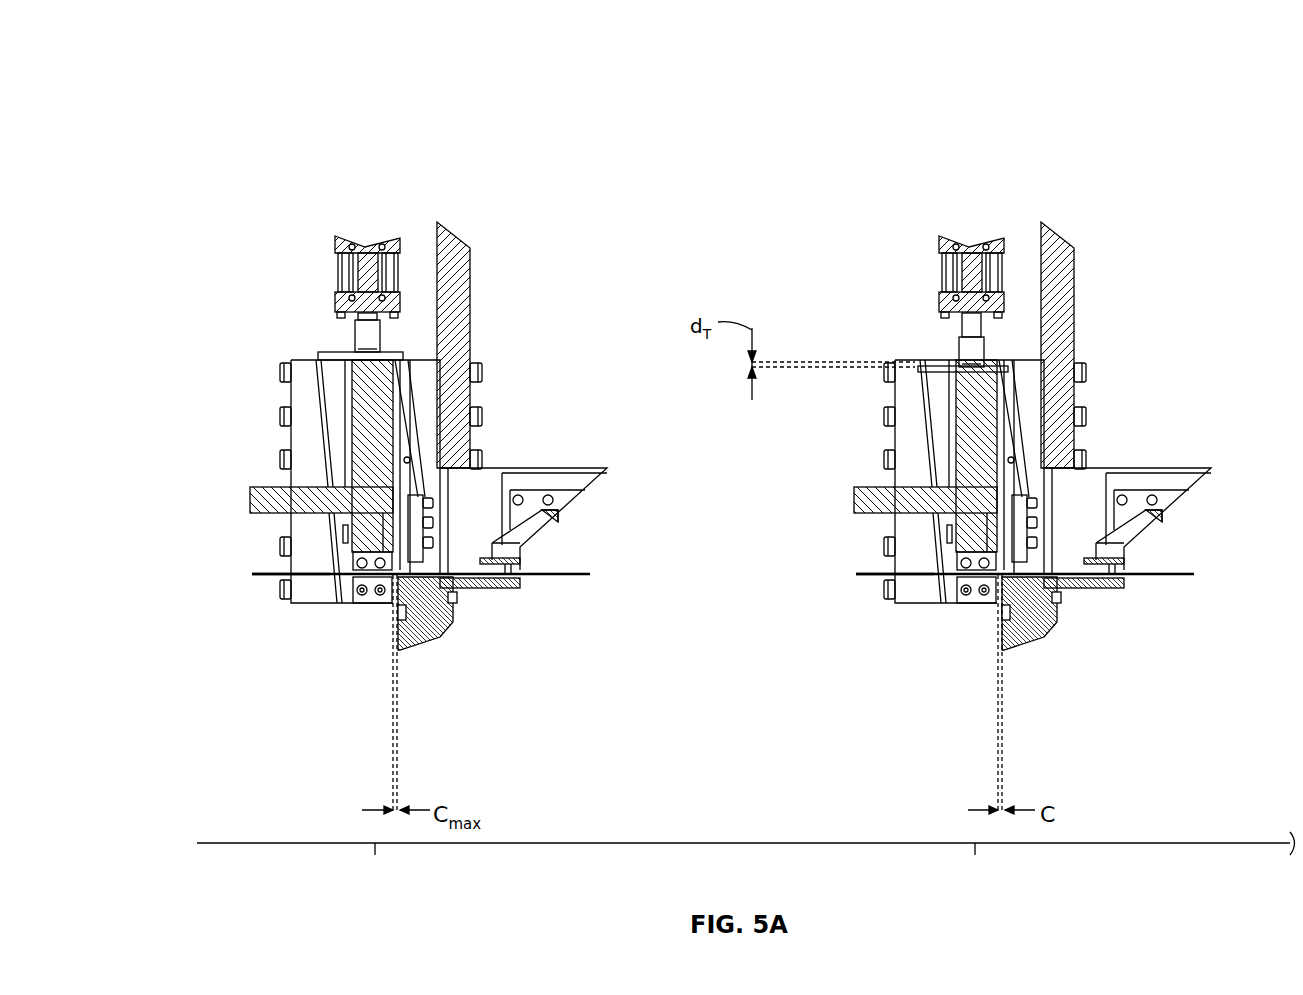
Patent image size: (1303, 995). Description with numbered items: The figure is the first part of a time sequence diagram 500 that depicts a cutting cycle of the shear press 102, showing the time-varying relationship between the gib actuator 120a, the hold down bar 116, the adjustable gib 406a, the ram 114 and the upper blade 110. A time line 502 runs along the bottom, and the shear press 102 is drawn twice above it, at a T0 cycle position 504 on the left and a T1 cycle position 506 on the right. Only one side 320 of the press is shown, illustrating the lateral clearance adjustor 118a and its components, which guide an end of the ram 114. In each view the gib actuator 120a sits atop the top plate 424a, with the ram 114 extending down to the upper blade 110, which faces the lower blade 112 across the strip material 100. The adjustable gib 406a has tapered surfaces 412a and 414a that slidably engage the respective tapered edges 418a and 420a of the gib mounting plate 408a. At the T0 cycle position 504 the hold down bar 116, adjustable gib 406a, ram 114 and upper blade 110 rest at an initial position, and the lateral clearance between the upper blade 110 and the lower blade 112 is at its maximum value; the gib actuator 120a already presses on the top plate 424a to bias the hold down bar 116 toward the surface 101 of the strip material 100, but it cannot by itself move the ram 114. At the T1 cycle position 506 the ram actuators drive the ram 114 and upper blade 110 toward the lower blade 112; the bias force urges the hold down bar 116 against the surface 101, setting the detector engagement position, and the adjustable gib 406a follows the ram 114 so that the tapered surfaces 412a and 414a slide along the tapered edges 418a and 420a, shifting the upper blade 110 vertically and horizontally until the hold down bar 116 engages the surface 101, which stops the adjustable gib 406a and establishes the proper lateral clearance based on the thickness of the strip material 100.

The time sequence diagram 500 is at (680, 112).
The time line 502 is at (525, 887).
The T0 cycle position 504 is at (325, 150).
The T1 cycle position 506 is at (929, 150).
The strip material 100 is at (575, 573).
The surface of the strip material 101 is at (258, 568).
The shear press 102 is at (350, 208).
The upper blade 110 is at (380, 568).
The lower blade 112 is at (393, 622).
The ram 114 is at (368, 425).
The hold down bar 116 is at (447, 587).
The lateral clearance adjustor 118a is at (315, 263).
The gib actuator 120a is at (364, 244).
The side 320 is at (470, 255).
The adjustable gib 406a is at (407, 432).
The gib mounting plate 408a is at (300, 483).
The tapered surface 412a is at (327, 450).
The tapered surface 414a is at (412, 468).
The tapered edge 418a is at (325, 520).
The tapered edge 420a is at (430, 378).
The top plate 424a is at (330, 354).